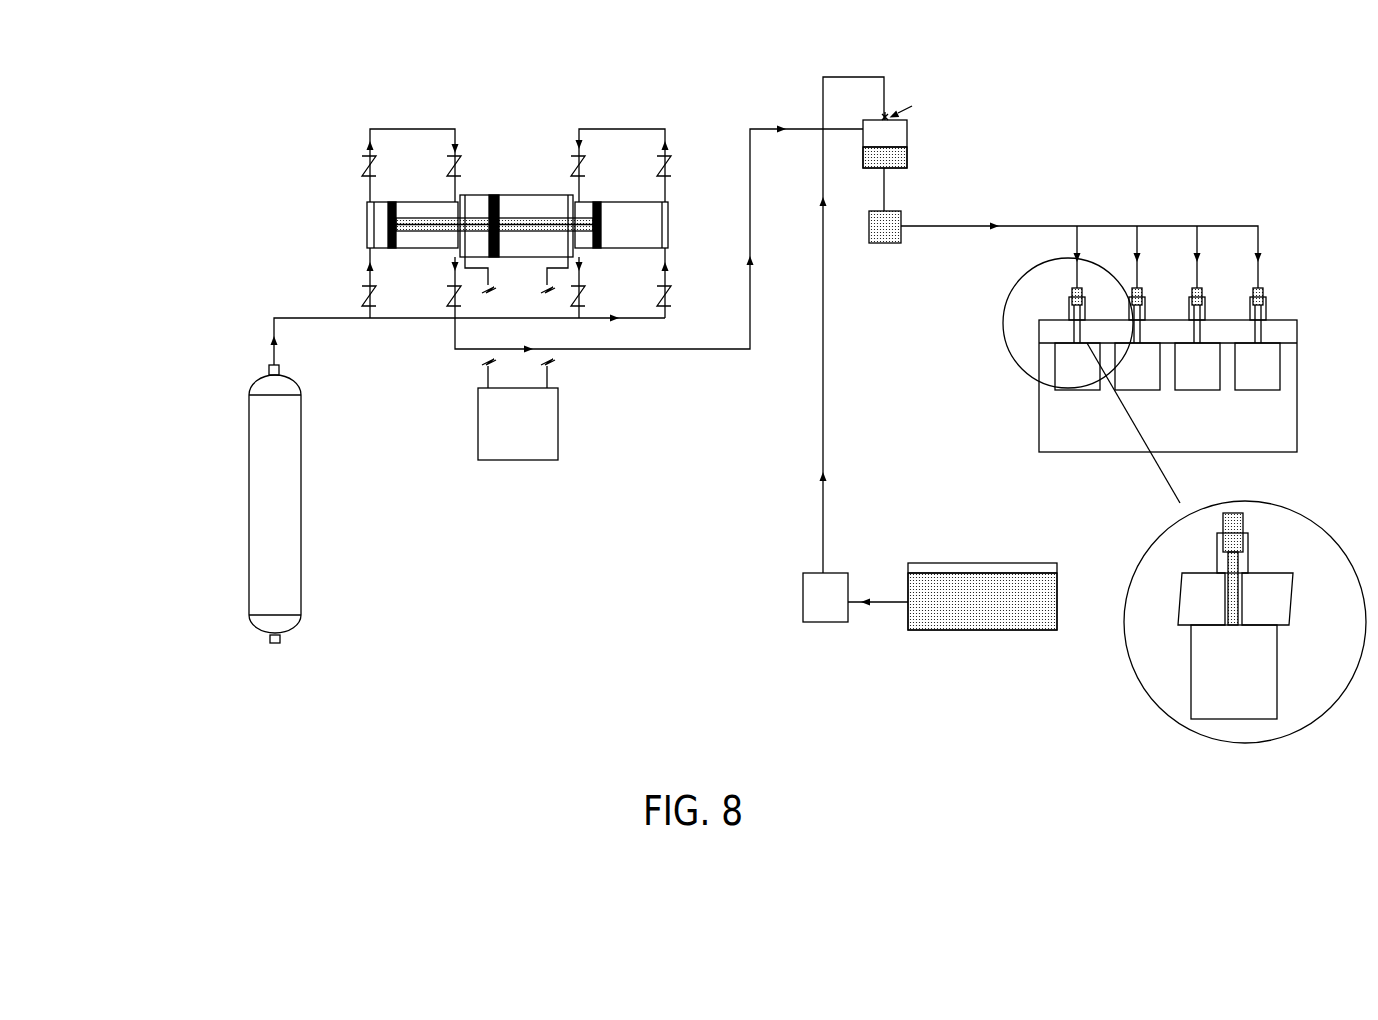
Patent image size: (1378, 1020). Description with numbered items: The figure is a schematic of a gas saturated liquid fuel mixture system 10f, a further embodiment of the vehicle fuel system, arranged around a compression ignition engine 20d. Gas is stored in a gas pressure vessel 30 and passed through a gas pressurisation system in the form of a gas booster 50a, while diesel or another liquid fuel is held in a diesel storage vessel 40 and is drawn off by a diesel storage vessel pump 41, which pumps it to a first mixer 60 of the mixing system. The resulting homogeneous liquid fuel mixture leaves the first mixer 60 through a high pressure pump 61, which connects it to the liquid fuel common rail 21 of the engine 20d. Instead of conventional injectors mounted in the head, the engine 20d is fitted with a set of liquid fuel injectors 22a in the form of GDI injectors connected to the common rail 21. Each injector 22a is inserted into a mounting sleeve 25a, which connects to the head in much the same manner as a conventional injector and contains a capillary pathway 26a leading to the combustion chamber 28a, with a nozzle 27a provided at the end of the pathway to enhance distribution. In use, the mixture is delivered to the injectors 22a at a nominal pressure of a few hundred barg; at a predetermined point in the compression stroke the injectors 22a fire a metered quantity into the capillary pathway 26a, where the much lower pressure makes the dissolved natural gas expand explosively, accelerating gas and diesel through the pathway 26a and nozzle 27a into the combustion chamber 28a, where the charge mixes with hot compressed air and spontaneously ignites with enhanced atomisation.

The gas saturated liquid fuel mixture system 10f is at (1088, 114).
The gas booster 50a is at (418, 172).
The gas pressure vessel 30 is at (258, 562).
The first mixer 60 is at (914, 158).
The high pressure pump 61 is at (890, 247).
The liquid fuel common rail 21 is at (1081, 246).
The compression ignition engine 20d is at (1294, 392).
The liquid fuel injectors 22a is at (1243, 518).
The mounting sleeve 25a is at (1248, 562).
The capillary pathway 26a is at (1228, 568).
The nozzle 27a is at (1235, 622).
The combustion chamber 28a is at (1173, 539).
The diesel storage vessel pump 41 is at (814, 599).
The diesel storage vessel 40 is at (1003, 635).